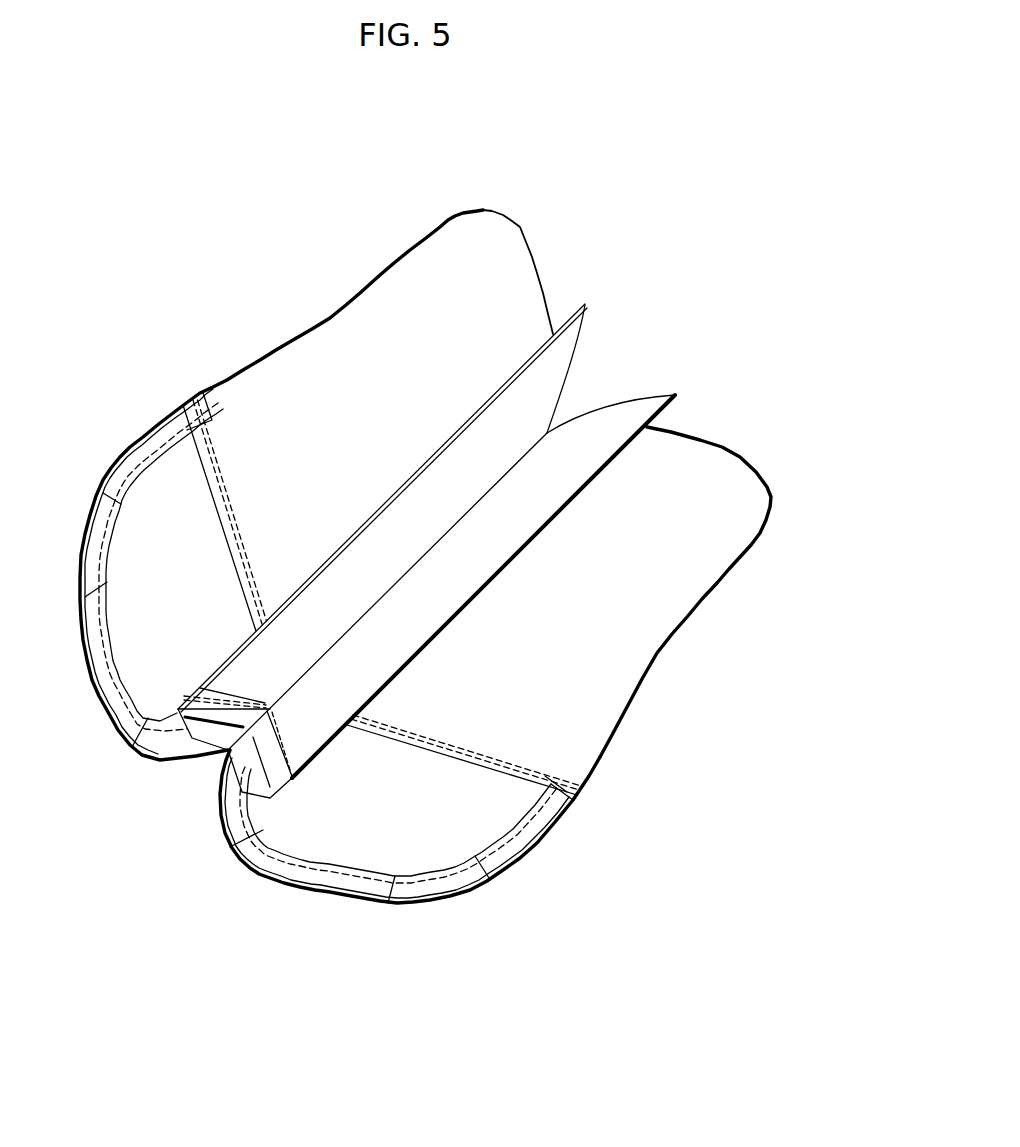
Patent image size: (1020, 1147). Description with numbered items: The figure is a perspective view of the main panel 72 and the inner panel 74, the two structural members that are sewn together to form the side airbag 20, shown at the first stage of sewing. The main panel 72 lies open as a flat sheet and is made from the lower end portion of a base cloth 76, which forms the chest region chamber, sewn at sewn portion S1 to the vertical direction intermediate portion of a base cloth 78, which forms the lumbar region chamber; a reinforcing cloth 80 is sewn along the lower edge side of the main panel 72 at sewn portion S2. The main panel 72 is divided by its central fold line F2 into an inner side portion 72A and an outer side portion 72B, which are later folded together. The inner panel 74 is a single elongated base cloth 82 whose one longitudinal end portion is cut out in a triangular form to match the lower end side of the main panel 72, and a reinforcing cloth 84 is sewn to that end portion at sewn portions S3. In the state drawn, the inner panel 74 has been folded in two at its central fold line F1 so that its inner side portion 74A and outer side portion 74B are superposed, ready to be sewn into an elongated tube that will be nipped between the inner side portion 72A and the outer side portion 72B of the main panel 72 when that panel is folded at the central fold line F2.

The side airbag 20 is at (643, 196).
The main panel 72 is at (473, 205).
The inner side portion 72A is at (720, 546).
The outer side portion 72B is at (392, 300).
The inner panel 74 is at (438, 532).
The inner side portion 74A is at (648, 390).
The outer side portion 74B is at (582, 337).
The base cloth 76 is at (627, 653).
The base cloth 78 is at (477, 823).
The reinforcing cloth 80 is at (350, 883).
The base cloth 82 is at (471, 406).
The reinforcing cloth 84 is at (213, 730).
The sewn portion S1 is at (233, 511).
The sewn portion S2 is at (118, 617).
The sewn portions S3 is at (230, 702).
The central fold line F1 is at (387, 587).
The central fold line F2 is at (417, 562).